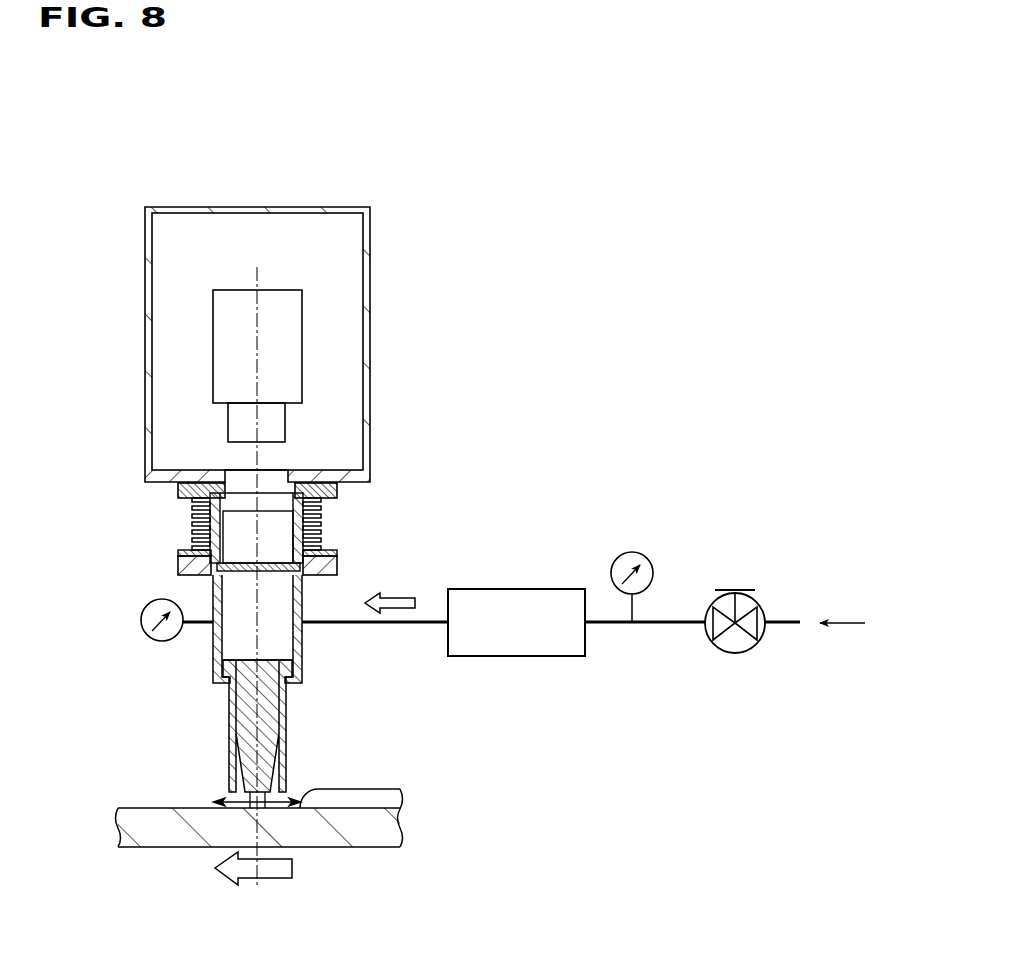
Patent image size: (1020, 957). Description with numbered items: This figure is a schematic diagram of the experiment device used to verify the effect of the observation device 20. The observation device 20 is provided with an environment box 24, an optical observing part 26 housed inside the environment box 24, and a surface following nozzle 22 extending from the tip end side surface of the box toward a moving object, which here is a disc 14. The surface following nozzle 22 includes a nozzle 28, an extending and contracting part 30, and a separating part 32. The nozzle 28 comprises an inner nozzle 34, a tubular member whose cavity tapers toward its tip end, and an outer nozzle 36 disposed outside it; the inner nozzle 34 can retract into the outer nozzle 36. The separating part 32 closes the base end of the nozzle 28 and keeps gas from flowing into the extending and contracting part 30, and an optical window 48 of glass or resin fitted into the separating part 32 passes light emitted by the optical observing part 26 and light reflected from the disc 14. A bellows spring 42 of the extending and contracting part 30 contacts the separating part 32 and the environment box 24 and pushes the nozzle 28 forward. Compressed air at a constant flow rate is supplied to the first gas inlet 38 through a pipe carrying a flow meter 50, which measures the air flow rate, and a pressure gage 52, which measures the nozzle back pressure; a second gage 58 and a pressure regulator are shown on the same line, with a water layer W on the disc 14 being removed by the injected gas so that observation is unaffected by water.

The observation device 20 is at (338, 139).
The environment box 24 is at (243, 206).
The optical observing part 26 is at (294, 287).
The surface following nozzle 22 is at (139, 568).
The extending and contracting part 30 is at (187, 525).
The bellows spring 42 is at (322, 518).
The separating part 32 is at (349, 562).
The optical window 48 is at (277, 567).
The nozzle 28 is at (199, 678).
The outer nozzle 36 is at (302, 635).
The inner nozzle 34 is at (288, 733).
The first gas inlet 38 is at (327, 626).
The pressure gage 52 is at (141, 622).
The flow meter 50 is at (524, 588).
The pressure gauge 58 is at (632, 551).
The disc 14 is at (362, 833).
The workpiece W is at (361, 797).